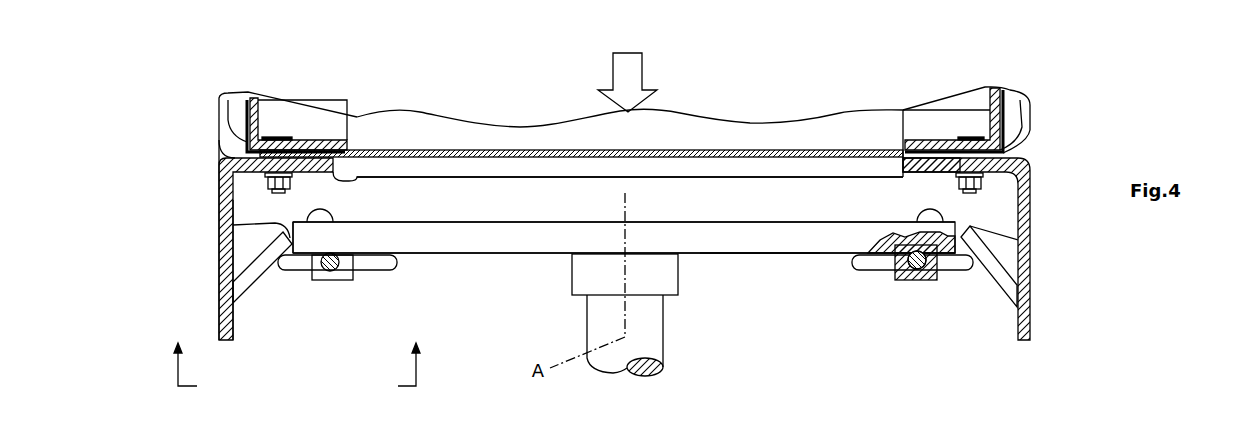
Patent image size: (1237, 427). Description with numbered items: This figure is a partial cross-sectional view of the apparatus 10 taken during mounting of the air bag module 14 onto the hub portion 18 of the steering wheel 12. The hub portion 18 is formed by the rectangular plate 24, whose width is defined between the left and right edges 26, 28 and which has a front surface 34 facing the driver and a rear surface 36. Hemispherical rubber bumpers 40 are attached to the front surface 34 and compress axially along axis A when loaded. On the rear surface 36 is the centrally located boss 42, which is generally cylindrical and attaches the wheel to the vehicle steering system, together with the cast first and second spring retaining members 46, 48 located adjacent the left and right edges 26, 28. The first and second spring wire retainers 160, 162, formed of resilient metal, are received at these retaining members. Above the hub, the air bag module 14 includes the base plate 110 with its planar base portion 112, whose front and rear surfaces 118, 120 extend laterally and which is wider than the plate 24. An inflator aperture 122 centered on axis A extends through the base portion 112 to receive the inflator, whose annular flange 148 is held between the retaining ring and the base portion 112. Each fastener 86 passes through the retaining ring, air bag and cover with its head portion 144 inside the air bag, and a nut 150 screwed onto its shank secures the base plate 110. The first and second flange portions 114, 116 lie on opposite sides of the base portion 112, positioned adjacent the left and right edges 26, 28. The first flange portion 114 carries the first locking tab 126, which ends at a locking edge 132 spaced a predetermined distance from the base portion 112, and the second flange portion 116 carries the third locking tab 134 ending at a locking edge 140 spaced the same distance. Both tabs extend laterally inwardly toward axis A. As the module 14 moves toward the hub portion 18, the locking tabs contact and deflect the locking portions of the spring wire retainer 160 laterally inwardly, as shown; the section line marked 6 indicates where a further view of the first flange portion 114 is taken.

The apparatus 10 is at (183, 104).
The air bag module 14 is at (188, 153).
The base plate 110 is at (206, 186).
The first flange portion 114 is at (206, 272).
The second flange portion 116 is at (1042, 212).
The base portion 112 is at (914, 152).
The rear surface 120 is at (395, 123).
The annular flange 148 is at (322, 150).
The inflator aperture 122 is at (340, 155).
The front surface 118 is at (335, 173).
The fastener 86 is at (981, 124).
The head portion 144 is at (965, 137).
The nut 150 is at (985, 183).
The steering wheel 12 is at (475, 265).
The front surface 34 is at (493, 222).
The rear surface 36 is at (528, 255).
The plate 24 is at (727, 243).
The hub portion 18 is at (780, 243).
The bumper 40 is at (317, 213).
The left edge 26 is at (290, 222).
The right edge 28 is at (957, 223).
The locking edge 132 is at (233, 217).
The first locking tab 126 is at (247, 280).
The locking edge 140 is at (1030, 243).
The third locking tab 134 is at (997, 277).
The first spring wire retainer 160 is at (402, 276).
The first spring retaining member 46 is at (330, 280).
The second spring wire retainer 162 is at (866, 280).
The second spring retaining member 48 is at (918, 280).
The boss 42 is at (662, 280).
The section line 6 is at (295, 351).